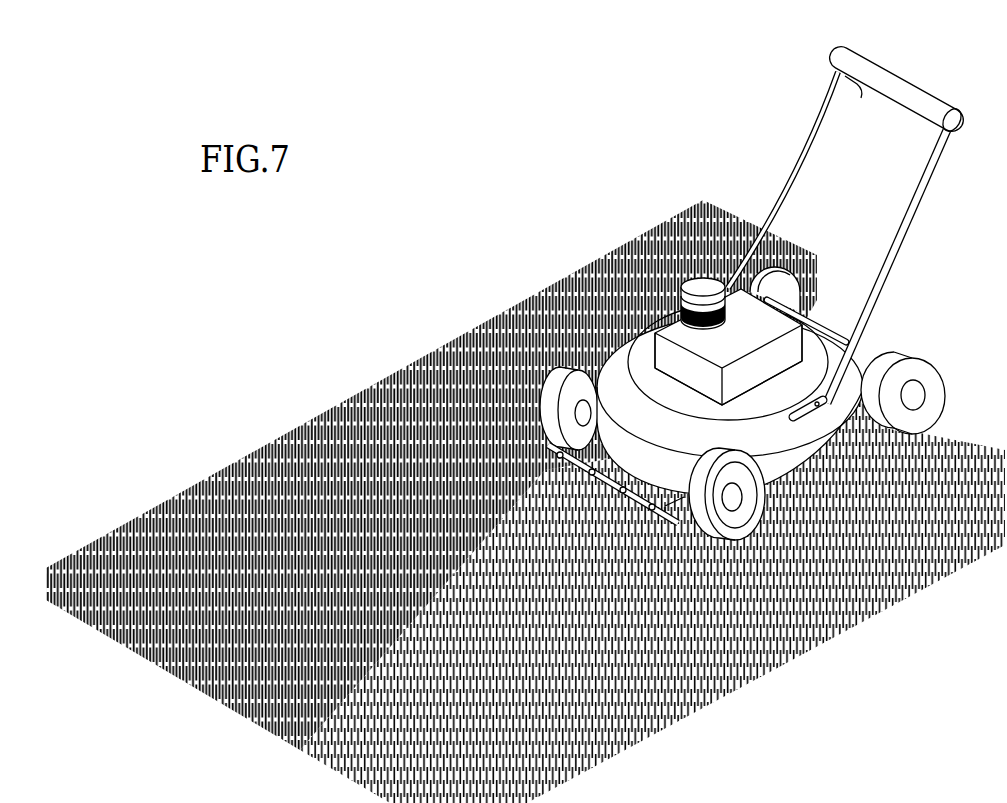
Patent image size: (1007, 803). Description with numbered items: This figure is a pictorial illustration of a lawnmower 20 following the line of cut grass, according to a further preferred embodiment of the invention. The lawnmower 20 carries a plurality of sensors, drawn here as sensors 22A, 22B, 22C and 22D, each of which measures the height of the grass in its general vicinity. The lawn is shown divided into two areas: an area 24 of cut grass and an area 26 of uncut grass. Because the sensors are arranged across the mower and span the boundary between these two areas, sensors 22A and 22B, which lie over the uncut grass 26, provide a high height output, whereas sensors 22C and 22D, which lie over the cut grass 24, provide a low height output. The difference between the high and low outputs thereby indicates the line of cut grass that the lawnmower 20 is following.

The lawnmower 20 is at (892, 315).
The sensor 22A is at (548, 447).
The sensor 22B is at (594, 468).
The sensor 22C is at (623, 487).
The sensor 22D is at (652, 512).
The area of cut grass 24 is at (712, 729).
The area of uncut grass 26 is at (316, 388).